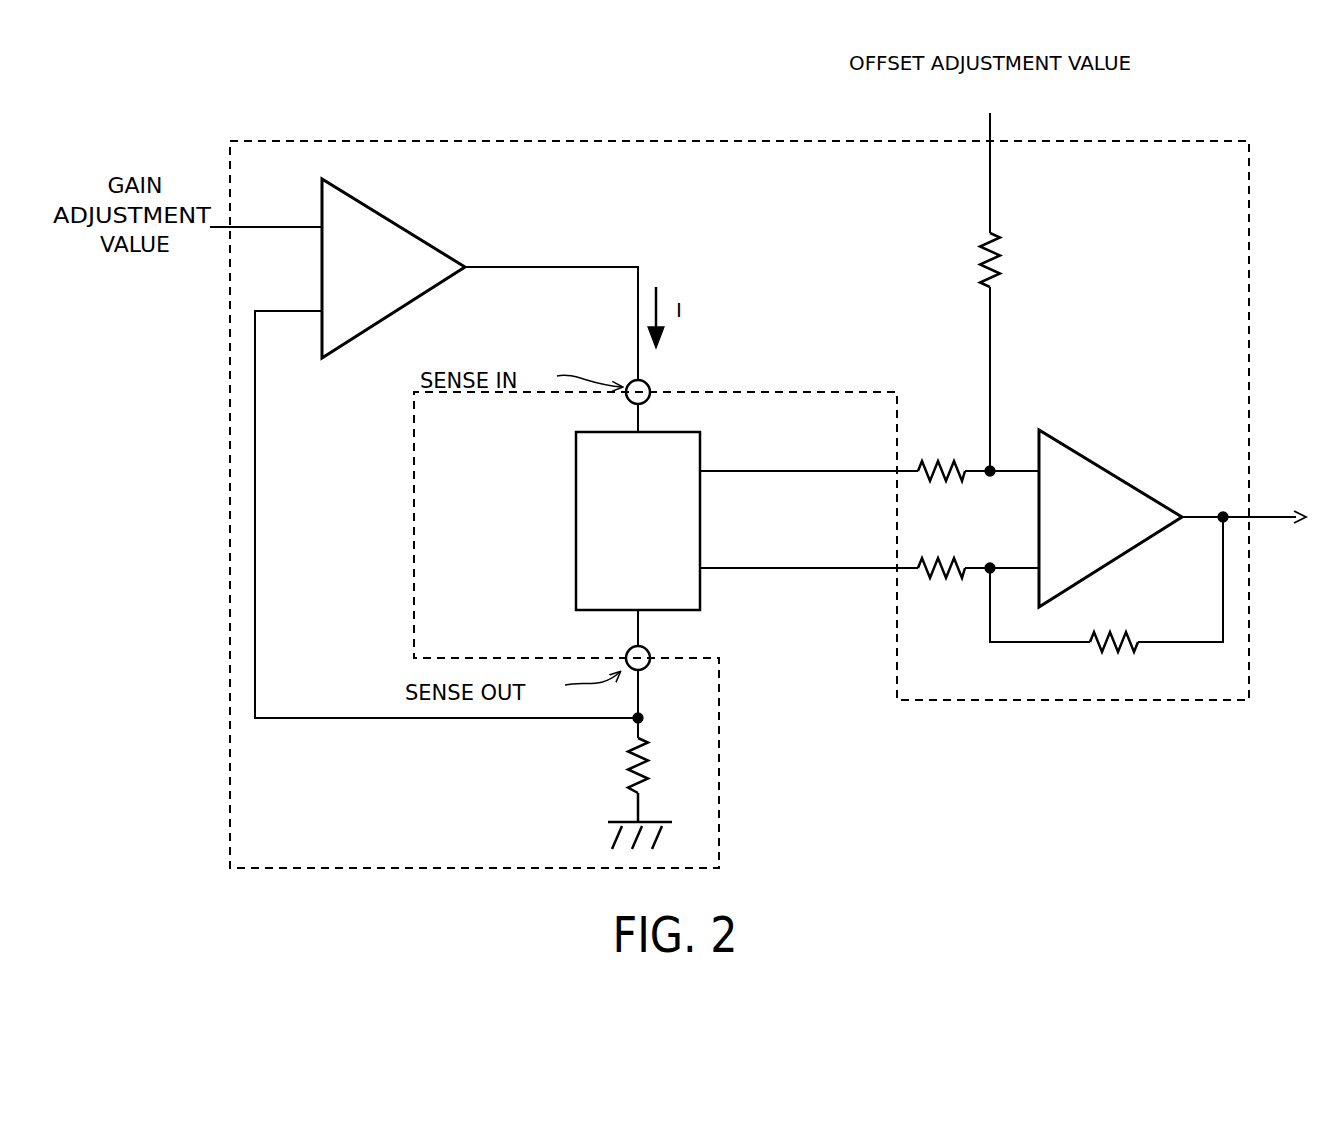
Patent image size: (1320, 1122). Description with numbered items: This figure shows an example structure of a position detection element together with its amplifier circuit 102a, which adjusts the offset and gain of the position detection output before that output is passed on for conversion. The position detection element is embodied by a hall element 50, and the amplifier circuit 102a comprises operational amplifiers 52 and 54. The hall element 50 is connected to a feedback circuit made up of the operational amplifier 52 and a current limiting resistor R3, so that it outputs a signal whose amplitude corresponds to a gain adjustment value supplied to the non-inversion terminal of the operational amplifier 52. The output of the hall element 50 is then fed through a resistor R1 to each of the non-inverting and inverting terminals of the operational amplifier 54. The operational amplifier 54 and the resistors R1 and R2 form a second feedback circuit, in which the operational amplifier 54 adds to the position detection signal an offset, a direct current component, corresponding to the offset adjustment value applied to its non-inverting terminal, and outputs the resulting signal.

The hall element 50 is at (576, 526).
The operational amplifier 52 is at (388, 212).
The operational amplifier 54 is at (1097, 462).
The amplifier circuit 102a is at (1165, 139).
The resistor R1 is at (941, 452).
The resistor R2 is at (1114, 625).
The current limiting resistor R3 is at (613, 765).